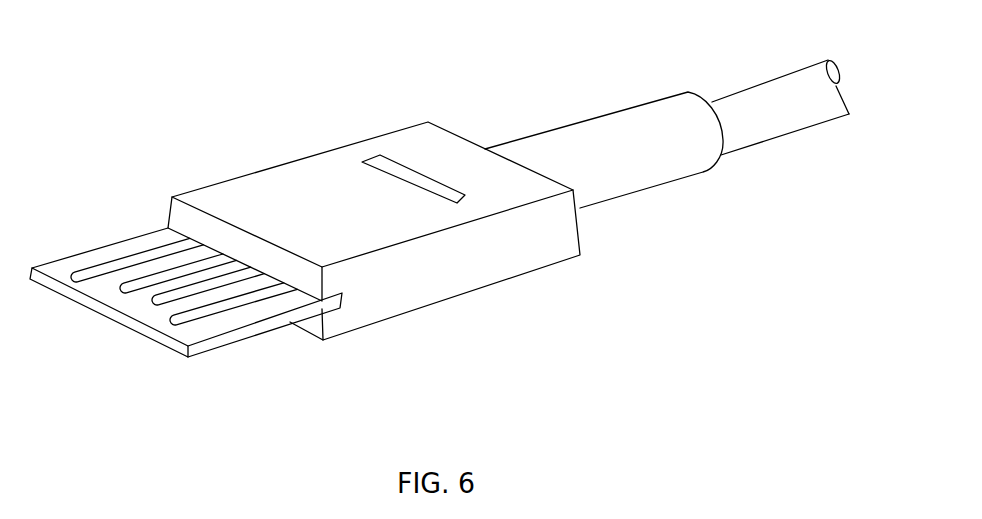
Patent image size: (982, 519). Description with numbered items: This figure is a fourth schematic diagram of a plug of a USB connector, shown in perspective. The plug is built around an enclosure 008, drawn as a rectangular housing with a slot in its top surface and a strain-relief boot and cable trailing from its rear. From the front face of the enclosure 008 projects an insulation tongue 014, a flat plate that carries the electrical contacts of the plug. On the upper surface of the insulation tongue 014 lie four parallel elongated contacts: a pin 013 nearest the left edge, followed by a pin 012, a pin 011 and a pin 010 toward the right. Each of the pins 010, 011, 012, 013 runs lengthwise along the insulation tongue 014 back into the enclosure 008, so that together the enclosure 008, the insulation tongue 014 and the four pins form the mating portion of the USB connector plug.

The enclosure 008 is at (300, 195).
The pin 010 is at (240, 296).
The pin 011 is at (200, 293).
The pin 012 is at (159, 270).
The pin 013 is at (102, 272).
The insulation tongue 014 is at (103, 313).